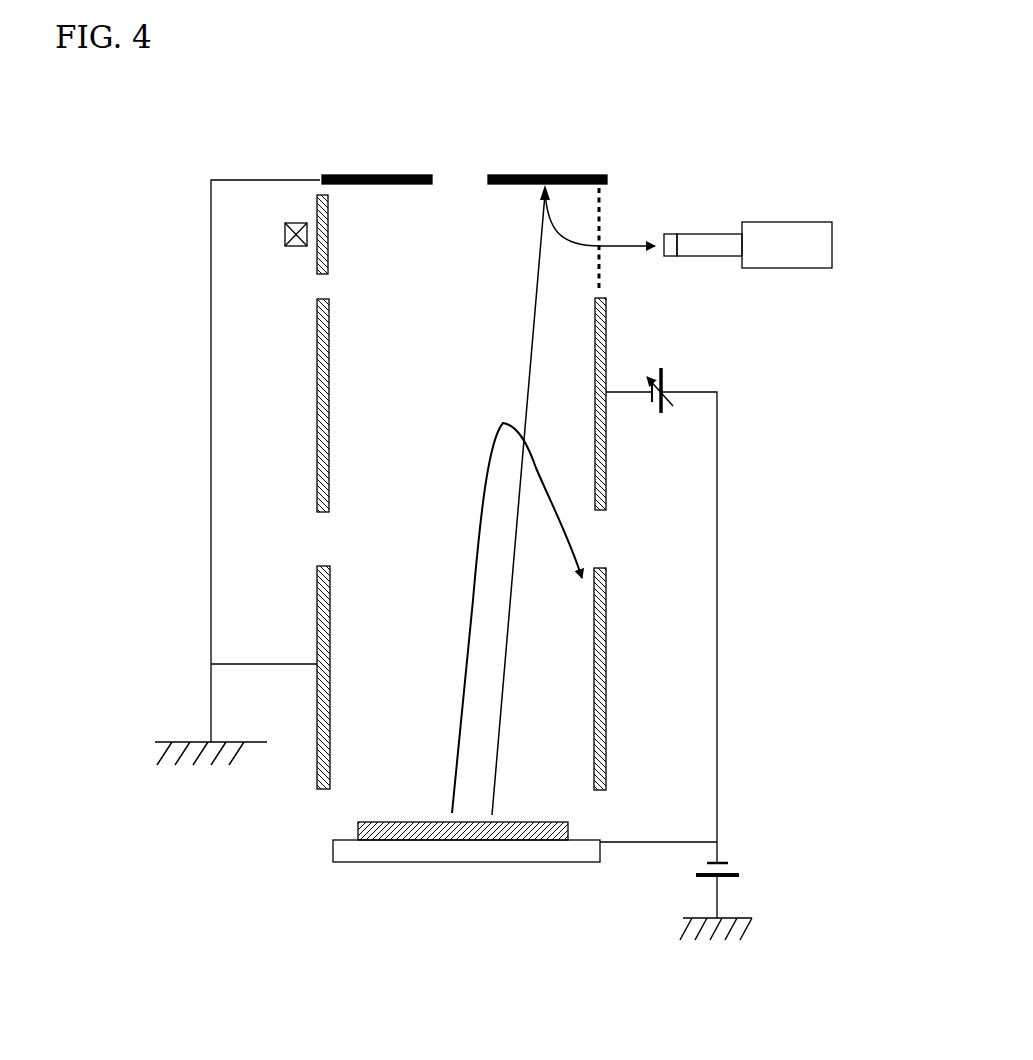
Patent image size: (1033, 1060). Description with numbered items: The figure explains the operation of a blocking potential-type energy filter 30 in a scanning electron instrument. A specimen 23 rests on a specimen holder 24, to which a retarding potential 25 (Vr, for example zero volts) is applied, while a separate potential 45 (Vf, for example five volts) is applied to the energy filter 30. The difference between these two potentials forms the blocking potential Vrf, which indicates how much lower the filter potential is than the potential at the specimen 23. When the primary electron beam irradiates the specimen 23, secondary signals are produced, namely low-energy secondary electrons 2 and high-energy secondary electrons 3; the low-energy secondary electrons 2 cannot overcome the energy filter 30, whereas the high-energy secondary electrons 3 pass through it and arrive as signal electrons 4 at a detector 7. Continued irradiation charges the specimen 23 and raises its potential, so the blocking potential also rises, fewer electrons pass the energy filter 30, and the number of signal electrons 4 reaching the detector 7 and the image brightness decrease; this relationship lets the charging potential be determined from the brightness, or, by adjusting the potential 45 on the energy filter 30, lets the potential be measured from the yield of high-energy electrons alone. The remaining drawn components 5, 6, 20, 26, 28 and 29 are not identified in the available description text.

The low-energy secondary electrons 2 is at (460, 713).
The high-energy secondary electrons 3 is at (500, 732).
The signal electrons 4 is at (600, 218).
The detector window 5 is at (671, 234).
The detector tube 6 is at (709, 234).
The detector 7 is at (782, 222).
The lower electrode 20 is at (317, 694).
The specimen 23 is at (568, 830).
The specimen holder 24 is at (428, 862).
The retarding potential 25 is at (733, 871).
The upper electrode 26 is at (317, 206).
The detector 28 is at (285, 234).
The aperture plate 29 is at (321, 180).
The energy filter 30 is at (317, 486).
The potential Vf 45 is at (663, 378).